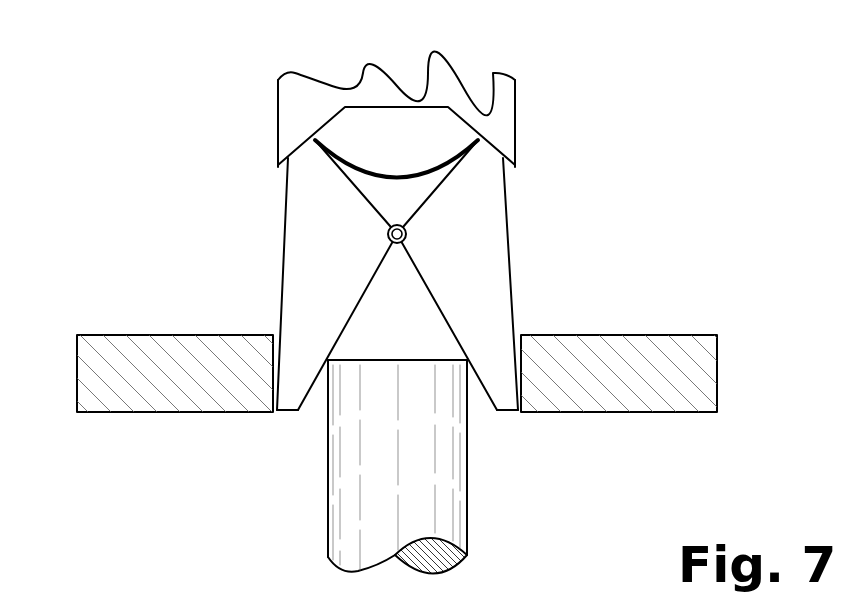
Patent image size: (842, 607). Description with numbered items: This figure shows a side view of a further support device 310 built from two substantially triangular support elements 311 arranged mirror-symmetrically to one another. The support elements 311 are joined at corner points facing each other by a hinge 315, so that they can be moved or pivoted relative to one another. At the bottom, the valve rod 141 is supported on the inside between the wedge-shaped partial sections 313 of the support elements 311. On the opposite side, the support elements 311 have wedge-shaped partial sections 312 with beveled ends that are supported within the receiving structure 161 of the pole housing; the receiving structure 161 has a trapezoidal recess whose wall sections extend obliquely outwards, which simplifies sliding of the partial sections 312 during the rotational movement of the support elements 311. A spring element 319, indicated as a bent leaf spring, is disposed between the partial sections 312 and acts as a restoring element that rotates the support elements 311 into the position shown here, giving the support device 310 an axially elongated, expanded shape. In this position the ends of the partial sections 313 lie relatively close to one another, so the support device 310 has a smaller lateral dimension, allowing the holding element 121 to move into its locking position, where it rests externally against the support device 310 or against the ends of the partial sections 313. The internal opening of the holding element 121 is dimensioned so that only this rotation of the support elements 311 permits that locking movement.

The support device 310 is at (321, 243).
The support elements 311 is at (302, 278).
The wedge-shaped partial sections 312 is at (312, 172).
The wedge-shaped partial sections 313 is at (293, 387).
The hinge 315 is at (407, 234).
The spring element 319 is at (397, 177).
The receiving structure 161 is at (368, 88).
The holding element 121 is at (130, 345).
The valve rod 141 is at (445, 516).